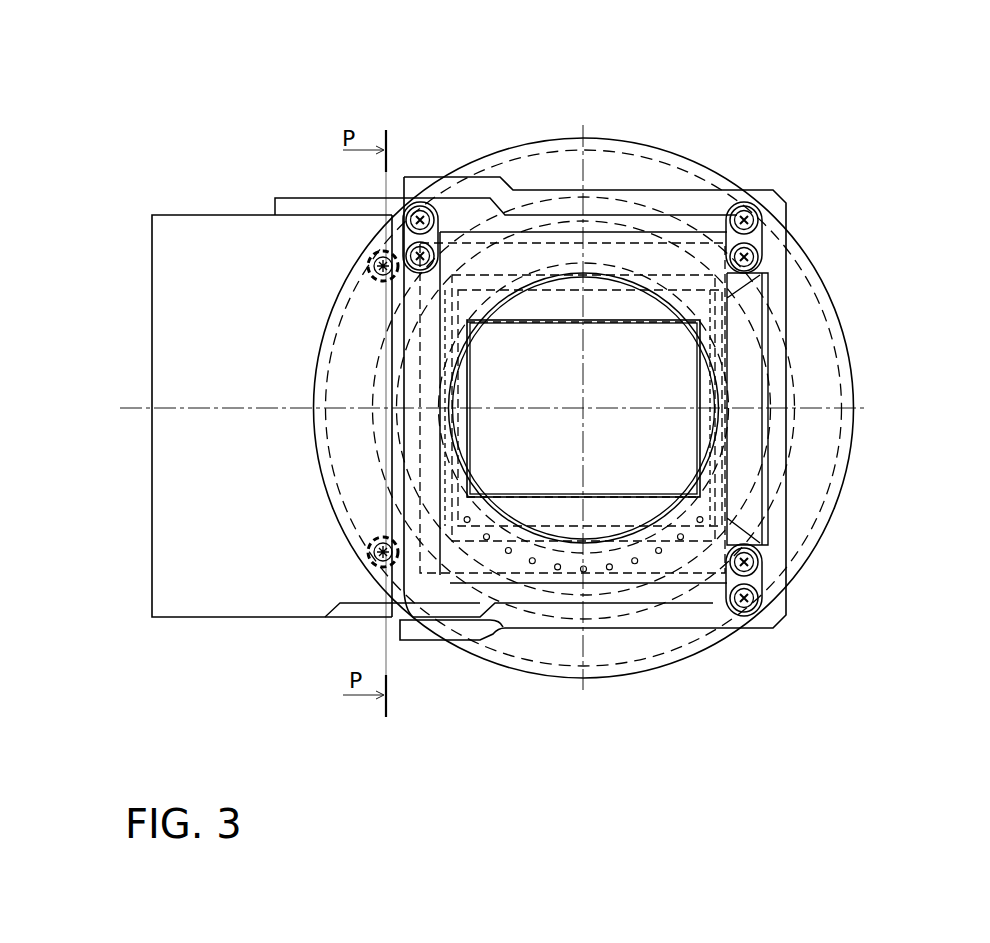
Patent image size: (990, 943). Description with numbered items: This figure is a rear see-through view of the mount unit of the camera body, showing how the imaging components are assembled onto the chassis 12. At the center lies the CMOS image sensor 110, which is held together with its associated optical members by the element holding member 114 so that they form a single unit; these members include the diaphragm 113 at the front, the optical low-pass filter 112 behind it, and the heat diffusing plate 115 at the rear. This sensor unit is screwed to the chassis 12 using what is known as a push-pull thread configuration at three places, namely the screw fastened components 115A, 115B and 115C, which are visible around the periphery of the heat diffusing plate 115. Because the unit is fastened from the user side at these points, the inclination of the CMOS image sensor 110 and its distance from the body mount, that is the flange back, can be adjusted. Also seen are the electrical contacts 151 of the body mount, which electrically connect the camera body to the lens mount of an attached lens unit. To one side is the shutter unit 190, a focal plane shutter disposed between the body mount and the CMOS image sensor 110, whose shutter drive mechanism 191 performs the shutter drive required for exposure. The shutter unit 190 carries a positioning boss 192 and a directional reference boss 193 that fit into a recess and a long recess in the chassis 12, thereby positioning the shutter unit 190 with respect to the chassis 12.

The chassis 12 is at (500, 153).
The CMOS image sensor 110 is at (543, 348).
The optical low-pass filter 112 is at (584, 495).
The diaphragm 113 is at (667, 257).
The element holding member 114 is at (737, 360).
The heat diffusing plate 115 is at (412, 318).
The screw fastened component 115A is at (757, 590).
The screw fastened component 115B is at (760, 222).
The screw fastened component 115C is at (437, 200).
The electrical contact 151 is at (507, 548).
The shutter unit 190 is at (372, 205).
The shutter drive mechanism 191 is at (280, 450).
The positioning boss 192 is at (367, 267).
The directional reference boss 193 is at (367, 551).